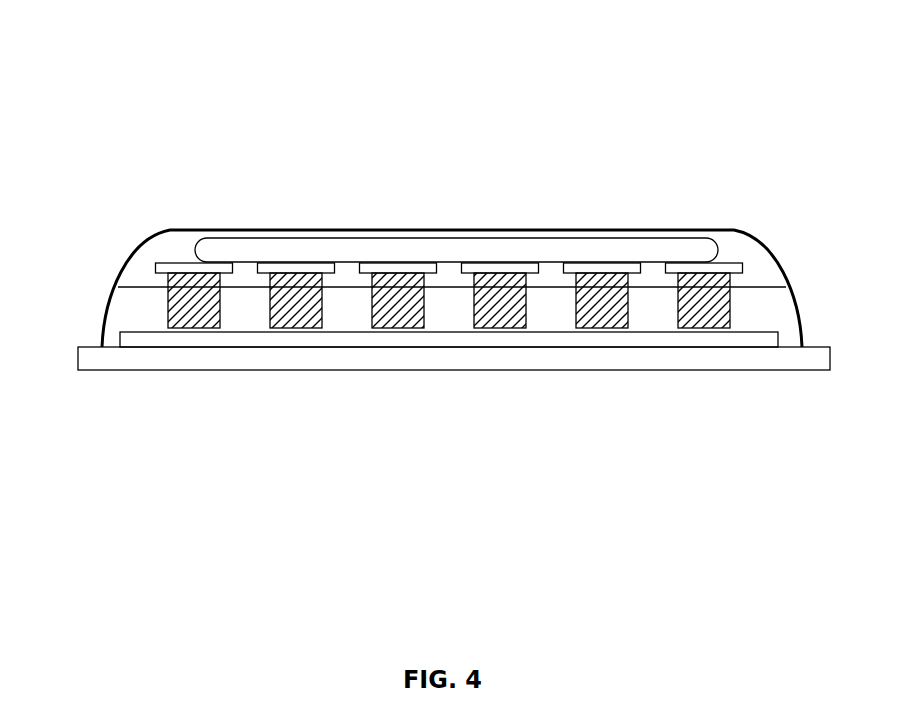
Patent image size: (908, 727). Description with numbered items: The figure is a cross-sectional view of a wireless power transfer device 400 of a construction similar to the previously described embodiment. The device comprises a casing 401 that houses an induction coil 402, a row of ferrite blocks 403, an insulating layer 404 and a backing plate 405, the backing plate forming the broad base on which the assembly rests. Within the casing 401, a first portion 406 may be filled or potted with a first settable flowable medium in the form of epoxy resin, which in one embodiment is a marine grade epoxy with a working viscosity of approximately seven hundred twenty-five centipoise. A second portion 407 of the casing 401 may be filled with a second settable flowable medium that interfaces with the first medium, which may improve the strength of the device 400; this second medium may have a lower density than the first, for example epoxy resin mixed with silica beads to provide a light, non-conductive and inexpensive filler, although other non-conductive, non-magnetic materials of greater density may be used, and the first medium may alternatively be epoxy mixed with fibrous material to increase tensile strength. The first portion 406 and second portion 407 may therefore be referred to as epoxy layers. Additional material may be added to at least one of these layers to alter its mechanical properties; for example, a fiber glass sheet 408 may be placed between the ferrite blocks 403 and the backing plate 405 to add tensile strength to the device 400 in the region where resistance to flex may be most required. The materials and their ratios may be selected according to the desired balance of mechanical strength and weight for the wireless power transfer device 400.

The wireless power transfer device 400 is at (233, 43).
The casing 401 is at (757, 238).
The induction coil 402 is at (341, 250).
The ferrite blocks 403 is at (532, 307).
The insulating layer 404 is at (411, 260).
The backing plate 405 is at (830, 358).
The first portion of the casing 406 is at (767, 278).
The second portion of the casing 407 is at (130, 320).
The fiber glass sheet 408 is at (765, 333).